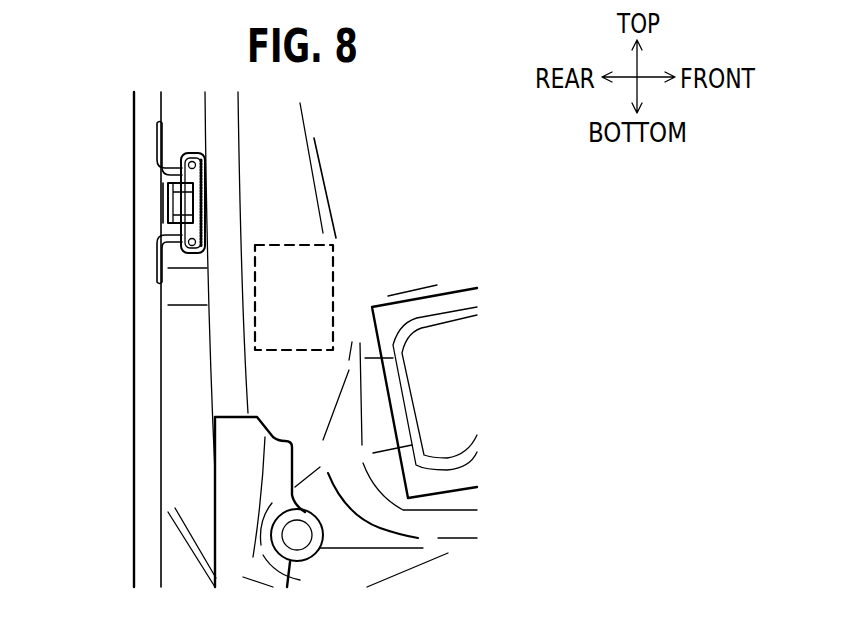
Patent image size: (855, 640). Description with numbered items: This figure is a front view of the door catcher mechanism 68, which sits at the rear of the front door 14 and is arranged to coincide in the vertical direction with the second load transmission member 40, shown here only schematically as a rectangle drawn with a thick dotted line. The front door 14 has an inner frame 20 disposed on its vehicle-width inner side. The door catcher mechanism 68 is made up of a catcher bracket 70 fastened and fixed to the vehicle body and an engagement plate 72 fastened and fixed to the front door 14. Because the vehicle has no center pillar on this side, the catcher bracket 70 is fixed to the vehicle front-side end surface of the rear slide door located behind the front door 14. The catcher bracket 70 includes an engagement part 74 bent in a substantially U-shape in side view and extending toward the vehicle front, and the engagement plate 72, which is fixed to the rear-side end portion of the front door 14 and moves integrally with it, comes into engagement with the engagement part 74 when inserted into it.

The front door 14 is at (113, 392).
The inner frame 20 is at (287, 385).
The second load transmission member 40 is at (333, 280).
The door catcher mechanism 68 is at (217, 168).
The catcher bracket 70 is at (175, 250).
The engagement plate 72 is at (164, 198).
The engagement part 74 is at (208, 200).